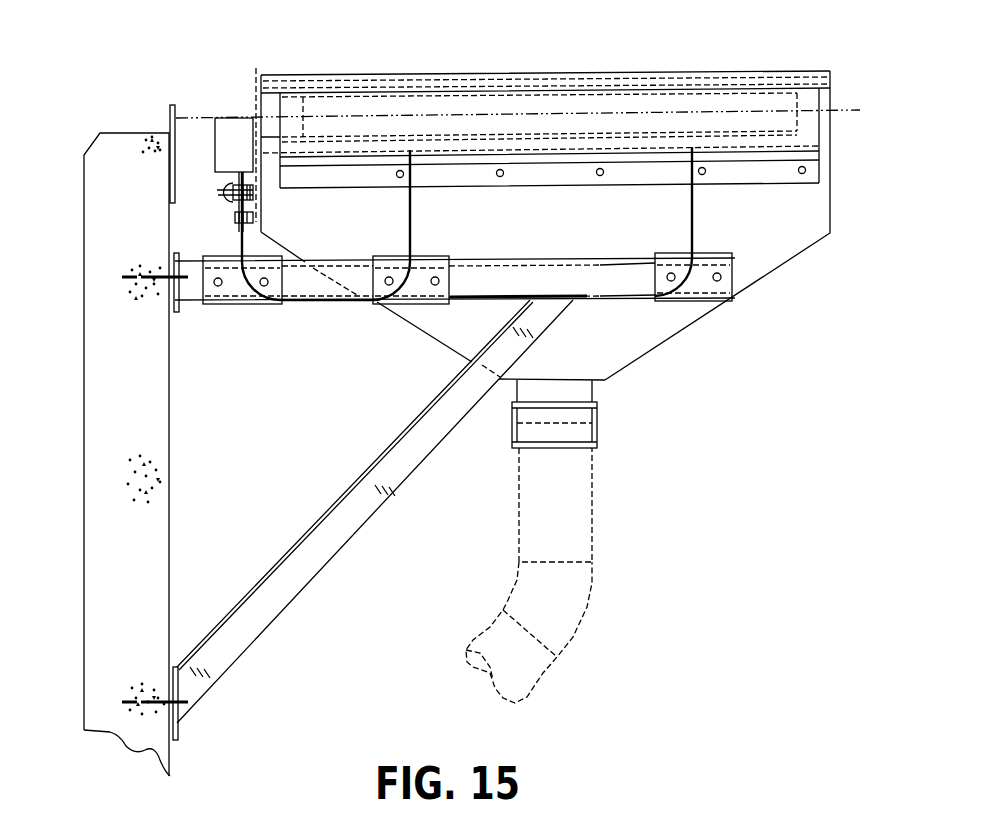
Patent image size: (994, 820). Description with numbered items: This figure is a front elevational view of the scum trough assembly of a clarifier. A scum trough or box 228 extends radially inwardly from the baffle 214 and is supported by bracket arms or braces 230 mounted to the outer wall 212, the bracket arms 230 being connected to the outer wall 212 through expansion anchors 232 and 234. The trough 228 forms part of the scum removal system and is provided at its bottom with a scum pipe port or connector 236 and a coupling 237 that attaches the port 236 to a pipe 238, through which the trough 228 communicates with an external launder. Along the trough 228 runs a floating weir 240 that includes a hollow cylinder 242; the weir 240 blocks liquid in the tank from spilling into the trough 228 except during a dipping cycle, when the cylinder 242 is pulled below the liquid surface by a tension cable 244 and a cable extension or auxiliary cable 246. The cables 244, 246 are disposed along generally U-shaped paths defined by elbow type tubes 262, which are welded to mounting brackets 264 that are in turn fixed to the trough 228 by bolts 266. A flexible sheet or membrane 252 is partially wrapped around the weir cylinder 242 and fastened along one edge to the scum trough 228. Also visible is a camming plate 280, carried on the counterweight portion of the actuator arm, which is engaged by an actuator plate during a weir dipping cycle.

The outer wall 212 is at (168, 440).
The baffle 214 is at (167, 112).
The scum trough 228 is at (810, 205).
The bracket arm 230 is at (378, 463).
The expansion anchor 232 is at (132, 277).
The expansion anchor 234 is at (128, 700).
The scum pipe port 236 is at (585, 387).
The coupling 237 is at (592, 437).
The pipe 238 is at (593, 600).
The floating weir 240 is at (752, 76).
The hollow cylinder 242 is at (825, 122).
The tension cable 244 is at (700, 230).
The cable extension 246 is at (410, 232).
The flexible membrane 252 is at (607, 118).
The elbow type tube 262 is at (413, 300).
The mounting bracket 264 is at (467, 319).
The bolt 266 is at (390, 286).
The camming plate 280 is at (230, 127).